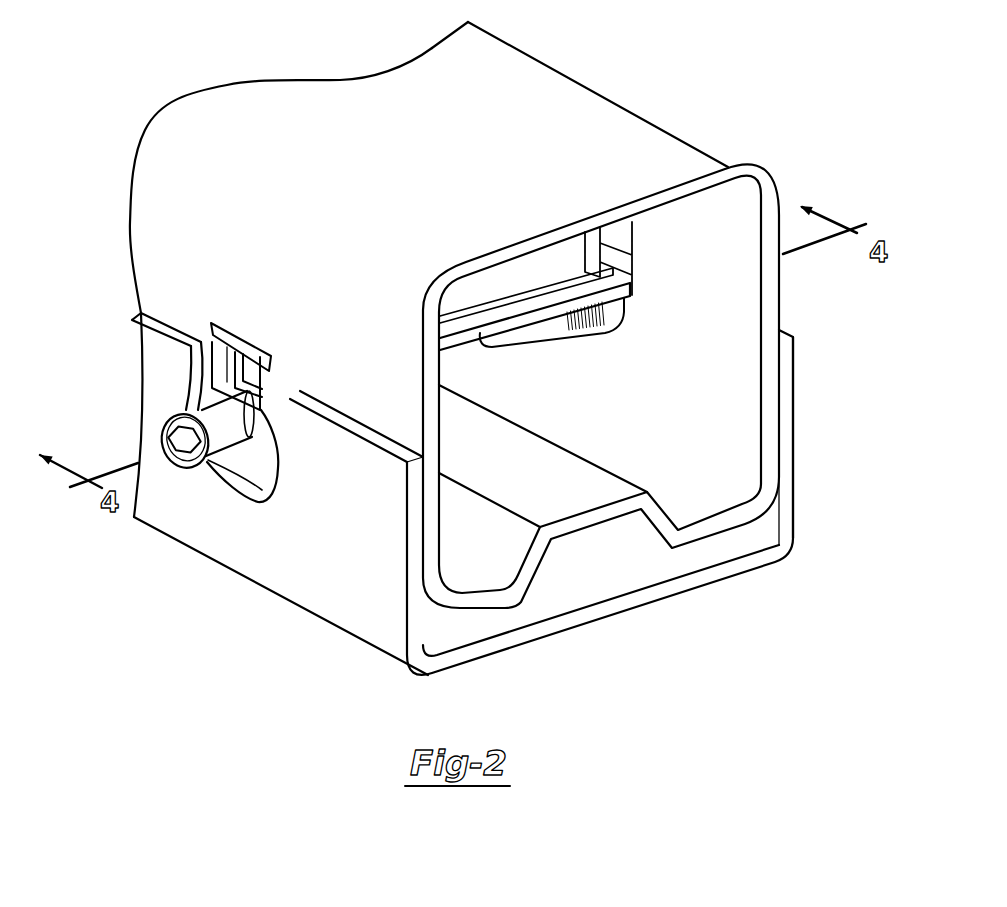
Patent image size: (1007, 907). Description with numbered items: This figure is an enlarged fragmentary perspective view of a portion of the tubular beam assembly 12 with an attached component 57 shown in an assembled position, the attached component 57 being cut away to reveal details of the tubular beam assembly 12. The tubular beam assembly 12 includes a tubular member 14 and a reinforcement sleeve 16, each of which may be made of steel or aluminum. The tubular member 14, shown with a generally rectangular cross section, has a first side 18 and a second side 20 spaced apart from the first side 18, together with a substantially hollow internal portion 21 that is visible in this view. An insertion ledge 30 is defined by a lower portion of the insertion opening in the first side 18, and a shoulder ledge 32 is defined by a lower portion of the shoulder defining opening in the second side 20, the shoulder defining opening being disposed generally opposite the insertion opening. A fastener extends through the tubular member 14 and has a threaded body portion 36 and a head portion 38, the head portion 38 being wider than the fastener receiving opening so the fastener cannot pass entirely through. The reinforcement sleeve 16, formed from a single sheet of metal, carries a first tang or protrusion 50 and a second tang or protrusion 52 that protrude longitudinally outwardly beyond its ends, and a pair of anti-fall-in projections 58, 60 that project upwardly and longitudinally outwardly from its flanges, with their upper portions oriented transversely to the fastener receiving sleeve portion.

The tubular frame member / support bracket assembly 12 is at (631, 78).
The top wall of tubular member 14 is at (322, 108).
The interior cavity 16 is at (471, 357).
The side wall of tubular member 18 is at (153, 217).
The right side wall of outer channel 20 is at (748, 380).
The bottom wall of outer channel 21 is at (700, 398).
The clip body / flange 30 is at (277, 446).
The strip / rail 32 is at (624, 290).
The spring bracket 36 is at (545, 328).
The bolt fastener 38 is at (170, 450).
The retaining hook 50 is at (231, 391).
The mounting post 52 is at (628, 262).
The left side plate of outer channel 57 is at (318, 577).
The clip tab 58 is at (226, 330).
The clip housing 60 is at (268, 358).